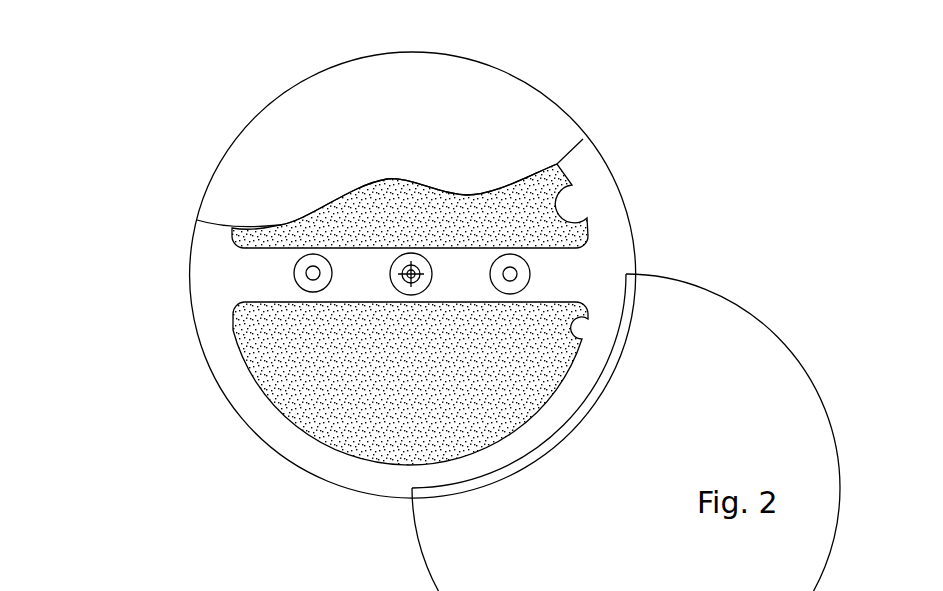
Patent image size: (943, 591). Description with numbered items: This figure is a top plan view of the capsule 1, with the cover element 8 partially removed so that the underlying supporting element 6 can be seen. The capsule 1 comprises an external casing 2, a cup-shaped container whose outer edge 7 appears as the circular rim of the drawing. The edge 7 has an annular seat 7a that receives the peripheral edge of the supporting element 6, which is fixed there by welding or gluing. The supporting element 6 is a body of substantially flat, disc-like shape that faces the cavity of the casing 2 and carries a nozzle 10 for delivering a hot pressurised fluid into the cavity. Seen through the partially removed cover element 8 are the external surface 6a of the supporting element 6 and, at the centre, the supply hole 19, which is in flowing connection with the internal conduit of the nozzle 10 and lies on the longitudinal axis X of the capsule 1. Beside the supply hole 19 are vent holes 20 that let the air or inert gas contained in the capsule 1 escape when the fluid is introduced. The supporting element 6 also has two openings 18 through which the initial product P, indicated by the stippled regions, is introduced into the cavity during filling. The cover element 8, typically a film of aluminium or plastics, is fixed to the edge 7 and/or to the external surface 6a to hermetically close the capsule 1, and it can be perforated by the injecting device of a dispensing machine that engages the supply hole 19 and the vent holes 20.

The capsule 1 is at (623, 98).
The external casing 2 is at (184, 307).
The supporting element 6 is at (262, 415).
The external surface 6a is at (577, 383).
The edge 7 is at (634, 242).
The annular seat 7a is at (556, 434).
The cover element 8 is at (495, 97).
The nozzle 10 is at (405, 275).
The openings 18 is at (580, 215).
The supply hole 19 is at (414, 290).
The vent hole 20 is at (314, 270).
The initial product P is at (292, 347).
The longitudinal axis X is at (405, 270).